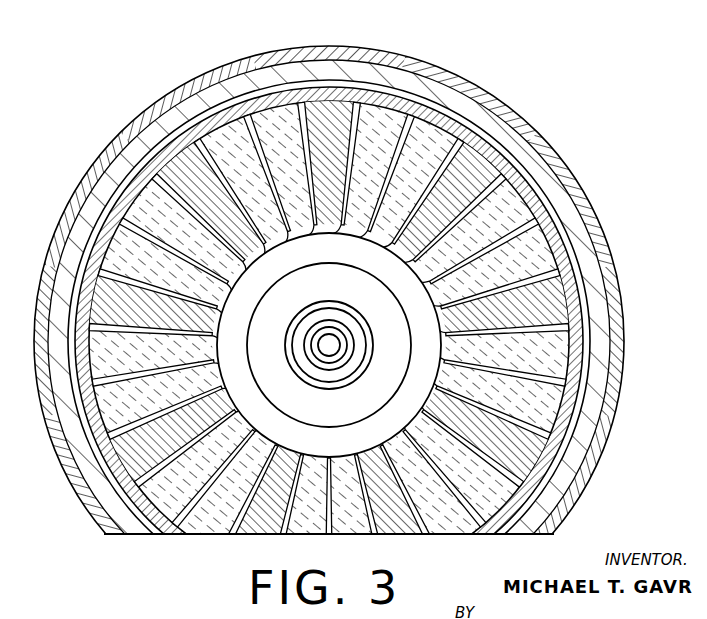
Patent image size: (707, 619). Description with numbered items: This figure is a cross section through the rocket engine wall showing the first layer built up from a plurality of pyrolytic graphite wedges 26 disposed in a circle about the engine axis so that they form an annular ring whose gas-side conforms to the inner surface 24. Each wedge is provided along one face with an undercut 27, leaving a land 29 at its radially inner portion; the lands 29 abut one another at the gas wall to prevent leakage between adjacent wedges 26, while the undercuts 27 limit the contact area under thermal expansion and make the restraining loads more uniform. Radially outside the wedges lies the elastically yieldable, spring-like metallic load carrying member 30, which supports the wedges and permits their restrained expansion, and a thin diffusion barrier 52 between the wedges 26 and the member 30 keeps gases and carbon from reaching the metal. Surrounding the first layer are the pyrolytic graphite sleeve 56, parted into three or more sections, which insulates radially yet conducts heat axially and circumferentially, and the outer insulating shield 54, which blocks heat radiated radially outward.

The inner surface 24 is at (255, 436).
The wedges 26 is at (352, 143).
The undercut 27 is at (284, 160).
The land 29 is at (318, 237).
The elastically yieldable metallic load carrying member 30 is at (597, 293).
The diffusion barrier layer 52 is at (570, 252).
The shield layer 54 is at (567, 181).
The sleeve 56 is at (573, 354).